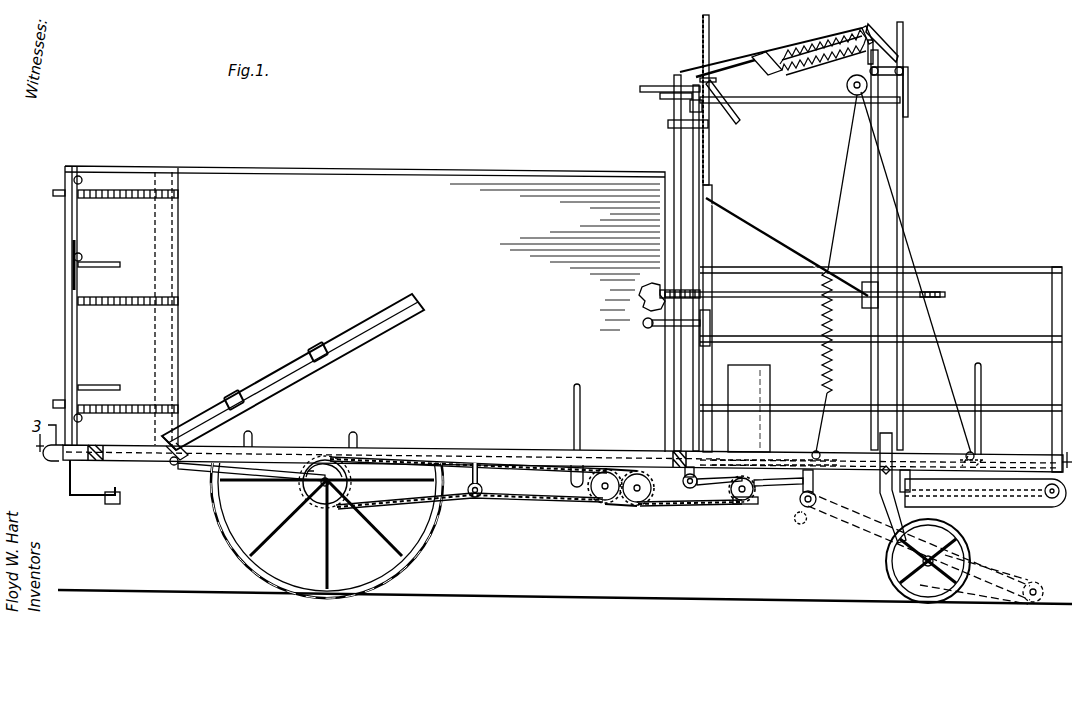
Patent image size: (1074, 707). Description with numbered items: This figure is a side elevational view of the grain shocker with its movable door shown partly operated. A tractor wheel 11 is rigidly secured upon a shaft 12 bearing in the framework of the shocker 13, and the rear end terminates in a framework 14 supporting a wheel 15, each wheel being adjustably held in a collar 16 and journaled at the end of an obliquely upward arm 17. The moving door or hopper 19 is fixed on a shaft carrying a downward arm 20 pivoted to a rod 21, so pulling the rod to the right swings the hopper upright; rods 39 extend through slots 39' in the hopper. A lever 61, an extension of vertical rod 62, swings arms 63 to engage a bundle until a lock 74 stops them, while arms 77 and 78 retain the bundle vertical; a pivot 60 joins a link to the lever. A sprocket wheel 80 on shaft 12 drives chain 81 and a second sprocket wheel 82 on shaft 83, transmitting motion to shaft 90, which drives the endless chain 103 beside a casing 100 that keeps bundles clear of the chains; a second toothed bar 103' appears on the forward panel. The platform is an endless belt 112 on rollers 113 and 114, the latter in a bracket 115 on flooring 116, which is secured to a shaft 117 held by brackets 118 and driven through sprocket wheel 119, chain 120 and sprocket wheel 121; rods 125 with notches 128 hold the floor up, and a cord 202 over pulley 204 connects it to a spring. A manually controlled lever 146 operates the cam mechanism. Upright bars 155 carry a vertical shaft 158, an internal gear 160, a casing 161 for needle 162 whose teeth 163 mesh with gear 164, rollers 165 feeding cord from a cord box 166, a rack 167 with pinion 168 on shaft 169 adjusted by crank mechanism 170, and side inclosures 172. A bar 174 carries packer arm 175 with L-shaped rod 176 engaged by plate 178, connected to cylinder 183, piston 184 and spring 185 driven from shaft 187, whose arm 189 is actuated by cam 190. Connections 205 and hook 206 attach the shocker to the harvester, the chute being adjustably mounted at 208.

The tractor wheel 11 is at (230, 521).
The shaft 12 is at (325, 482).
The framework of the shocker 13 is at (470, 459).
The framework 14 is at (1040, 462).
The wheels 15 is at (966, 547).
The collar 16 is at (893, 445).
The arm 17 is at (900, 541).
The moving door or hopper 19 is at (300, 378).
The arm 20 is at (176, 465).
The rod 21 is at (210, 469).
The rods 39 is at (312, 435).
The slots 39' is at (283, 376).
The pivot 60 is at (112, 504).
The lever 61 is at (90, 497).
The vertical rod 62 is at (78, 283).
The arms 63 is at (80, 184).
The lock 74 is at (80, 262).
The arm 77 is at (116, 262).
The arm 78 is at (110, 385).
The sprocket wheel 80 is at (322, 501).
The chain 81 is at (395, 501).
The second sprocket wheel 82 is at (605, 503).
The shaft 83 is at (608, 476).
The shaft 90 is at (630, 501).
The casing 100 is at (365, 309).
The endless chain 103 is at (128, 316).
The toothed bar 103' is at (128, 210).
The endless belt 112 is at (820, 462).
The roller 113 is at (745, 505).
The roller 114 is at (1057, 505).
The bracket 115 is at (1030, 507).
The flooring 116 is at (1002, 482).
The shaft 117 is at (725, 501).
The brackets 118 is at (747, 476).
The sprocket wheel 119 is at (730, 491).
The chain 120 is at (700, 506).
The sprocket wheel 121 is at (640, 503).
The rods 125 is at (981, 395).
The notch 128 is at (988, 453).
The manually controlled lever 146 is at (580, 420).
The bars 155 is at (710, 325).
The vertical shaft 158 is at (674, 156).
The internal gear 160 is at (670, 112).
The casing 161 is at (790, 297).
The needle 162 is at (652, 283).
The teeth 163 is at (940, 297).
The gear 164 is at (700, 290).
The rollers 165 is at (648, 328).
The cord box 166 is at (749, 408).
The rack 167 is at (709, 30).
The pinion 168 is at (720, 82).
The shaft 169 is at (730, 60).
The crank mechanism 170 is at (738, 122).
The inclosure 172 is at (1004, 258).
The bar 174 is at (908, 73).
The packer arm 175 is at (878, 225).
The L-shaped rod 176 is at (880, 48).
The plate 178 is at (870, 22).
The cylinder 183 is at (810, 42).
The piston 184 is at (758, 40).
The compression spring 185 is at (818, 66).
The shaft 187 is at (707, 370).
The arm 189 is at (648, 86).
The cam 190 is at (665, 99).
The cord 202 is at (916, 258).
The pulley 204 is at (851, 76).
The connections 205 is at (670, 460).
The hook 206 is at (60, 448).
The adjustable mounting 208 is at (830, 262).